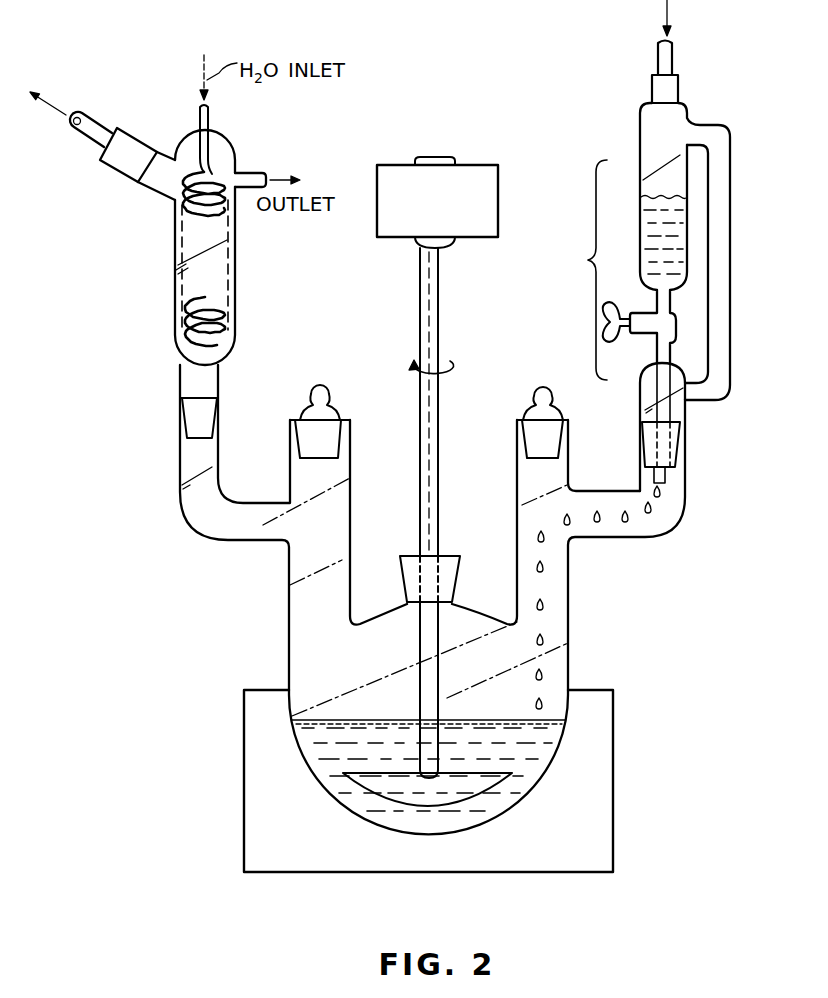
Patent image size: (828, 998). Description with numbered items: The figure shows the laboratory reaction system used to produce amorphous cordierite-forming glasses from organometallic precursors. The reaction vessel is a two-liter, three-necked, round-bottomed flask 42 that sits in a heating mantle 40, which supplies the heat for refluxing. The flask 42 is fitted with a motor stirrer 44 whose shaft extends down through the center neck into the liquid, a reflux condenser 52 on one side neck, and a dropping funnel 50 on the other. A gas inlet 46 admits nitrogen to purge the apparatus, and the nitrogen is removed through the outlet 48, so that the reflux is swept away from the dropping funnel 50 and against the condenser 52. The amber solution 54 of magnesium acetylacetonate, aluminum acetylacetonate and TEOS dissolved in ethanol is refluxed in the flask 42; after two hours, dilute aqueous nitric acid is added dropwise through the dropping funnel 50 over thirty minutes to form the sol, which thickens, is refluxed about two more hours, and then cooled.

The heating mantle 40 is at (262, 797).
The round-bottomed flask 42 is at (320, 665).
The motor stirrer 44 is at (393, 178).
The gas inlet 46 is at (667, 62).
The gas outlet 48 is at (100, 130).
The dropping funnel 50 is at (589, 261).
The reflux condenser 52 is at (190, 316).
The amber solution 54 is at (497, 786).